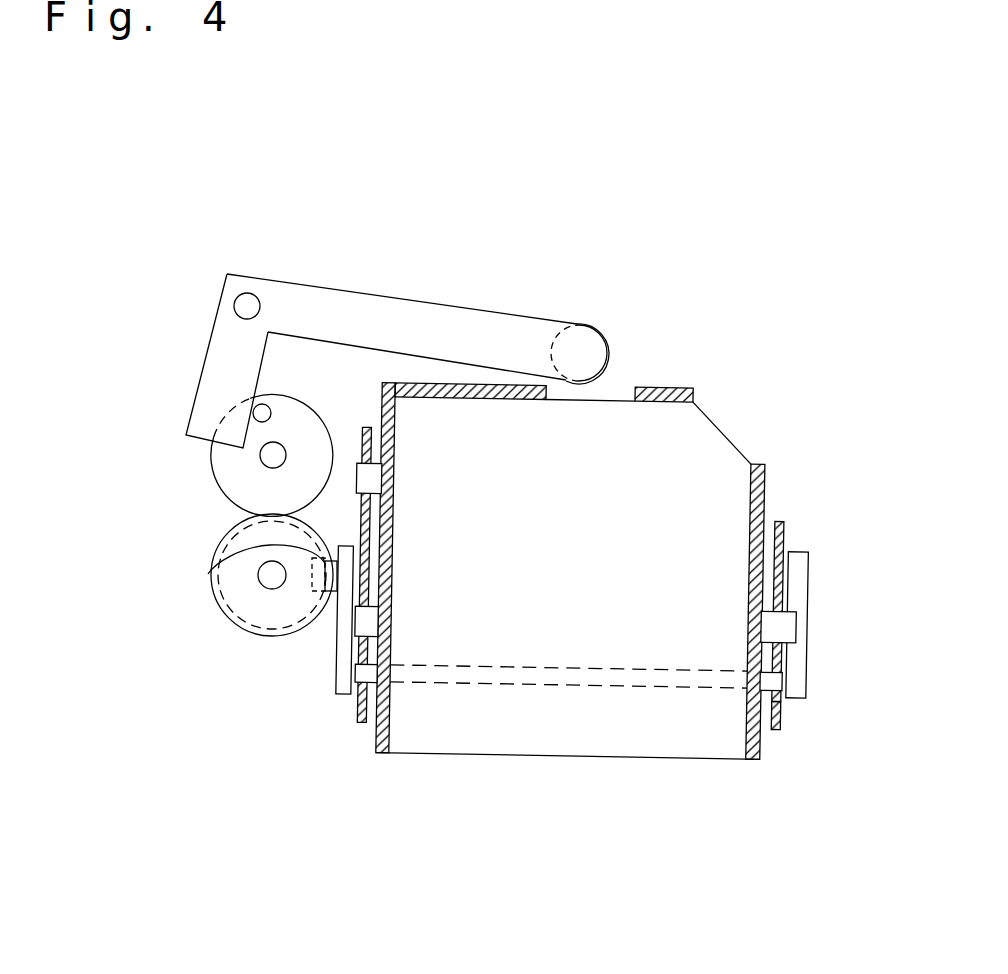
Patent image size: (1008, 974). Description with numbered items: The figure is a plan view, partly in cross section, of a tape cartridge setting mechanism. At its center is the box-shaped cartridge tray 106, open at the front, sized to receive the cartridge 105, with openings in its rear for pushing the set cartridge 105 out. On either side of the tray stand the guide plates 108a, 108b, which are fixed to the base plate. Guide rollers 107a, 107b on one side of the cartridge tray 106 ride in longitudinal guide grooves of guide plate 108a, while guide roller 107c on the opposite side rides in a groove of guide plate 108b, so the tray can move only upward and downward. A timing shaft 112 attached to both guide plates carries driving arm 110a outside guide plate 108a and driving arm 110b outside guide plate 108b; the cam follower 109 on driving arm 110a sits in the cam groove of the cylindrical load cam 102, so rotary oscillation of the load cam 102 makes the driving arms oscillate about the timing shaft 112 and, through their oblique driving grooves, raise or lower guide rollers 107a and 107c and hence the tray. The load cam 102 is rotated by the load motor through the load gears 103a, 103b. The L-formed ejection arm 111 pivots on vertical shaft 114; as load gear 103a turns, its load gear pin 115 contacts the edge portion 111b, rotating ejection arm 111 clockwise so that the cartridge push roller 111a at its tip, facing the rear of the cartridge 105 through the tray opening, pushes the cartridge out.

The load cam 102 is at (228, 622).
The load gear 103a is at (215, 478).
The load gear 103b is at (213, 590).
The cartridge 105 is at (552, 757).
The cartridge tray 106 is at (674, 386).
The guide roller 107a is at (360, 625).
The guide roller 107b is at (374, 462).
The guide roller 107c is at (777, 628).
The guide plate 108a is at (360, 722).
The guide plate 108b is at (783, 542).
The cam follower 109 is at (208, 574).
The driving arm 110a is at (345, 692).
The driving arm 110b is at (806, 657).
The ejection arm 111 is at (527, 317).
The cartridge push roller 111a is at (615, 362).
The edge portion 111b is at (265, 370).
The timing shaft 112 is at (766, 740).
The vertical shaft 114 is at (249, 295).
The load gear pin 115 is at (270, 408).